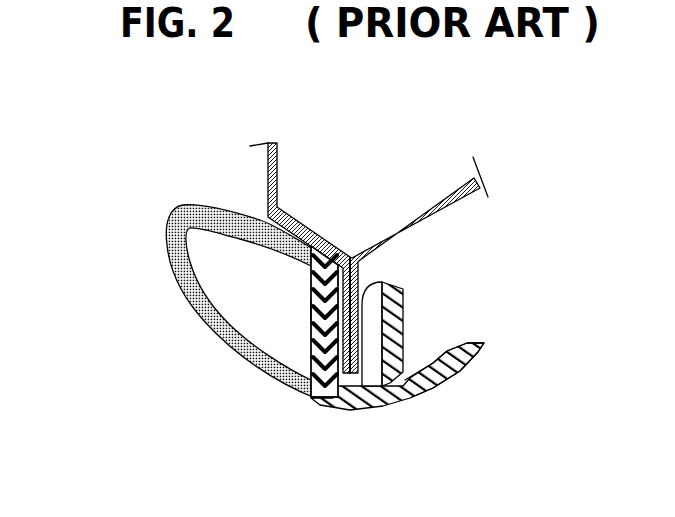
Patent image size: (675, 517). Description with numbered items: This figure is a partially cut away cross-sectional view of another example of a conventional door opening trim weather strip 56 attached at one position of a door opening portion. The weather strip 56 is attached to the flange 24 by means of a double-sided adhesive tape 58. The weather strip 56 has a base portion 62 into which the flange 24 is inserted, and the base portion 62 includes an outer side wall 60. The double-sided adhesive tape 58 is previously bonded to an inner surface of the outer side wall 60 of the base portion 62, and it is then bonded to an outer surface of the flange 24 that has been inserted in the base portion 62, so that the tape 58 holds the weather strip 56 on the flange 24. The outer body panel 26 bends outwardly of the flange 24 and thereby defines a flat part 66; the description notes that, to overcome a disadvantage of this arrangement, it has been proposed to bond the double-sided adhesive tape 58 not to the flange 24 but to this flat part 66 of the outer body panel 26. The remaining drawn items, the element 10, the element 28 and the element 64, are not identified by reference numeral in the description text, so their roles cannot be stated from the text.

The first panel flange 10 is at (278, 191).
The flange 24 is at (423, 388).
The outer body panel 26 is at (277, 148).
The second panel flange 28 is at (437, 210).
The door opening trim weather strip 56 is at (163, 217).
The double-sided adhesive tape 58 is at (314, 353).
The outer side wall 60 is at (312, 312).
The base portion 62 is at (373, 410).
The second retainer leg 64 is at (407, 313).
The flat part 66 is at (319, 234).